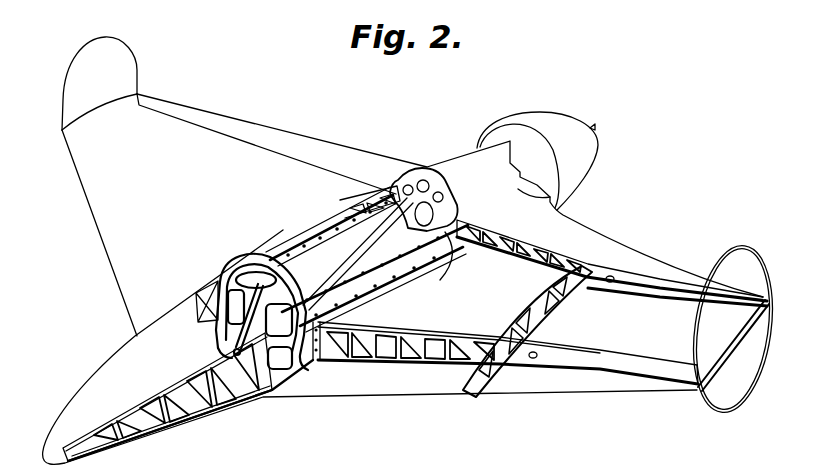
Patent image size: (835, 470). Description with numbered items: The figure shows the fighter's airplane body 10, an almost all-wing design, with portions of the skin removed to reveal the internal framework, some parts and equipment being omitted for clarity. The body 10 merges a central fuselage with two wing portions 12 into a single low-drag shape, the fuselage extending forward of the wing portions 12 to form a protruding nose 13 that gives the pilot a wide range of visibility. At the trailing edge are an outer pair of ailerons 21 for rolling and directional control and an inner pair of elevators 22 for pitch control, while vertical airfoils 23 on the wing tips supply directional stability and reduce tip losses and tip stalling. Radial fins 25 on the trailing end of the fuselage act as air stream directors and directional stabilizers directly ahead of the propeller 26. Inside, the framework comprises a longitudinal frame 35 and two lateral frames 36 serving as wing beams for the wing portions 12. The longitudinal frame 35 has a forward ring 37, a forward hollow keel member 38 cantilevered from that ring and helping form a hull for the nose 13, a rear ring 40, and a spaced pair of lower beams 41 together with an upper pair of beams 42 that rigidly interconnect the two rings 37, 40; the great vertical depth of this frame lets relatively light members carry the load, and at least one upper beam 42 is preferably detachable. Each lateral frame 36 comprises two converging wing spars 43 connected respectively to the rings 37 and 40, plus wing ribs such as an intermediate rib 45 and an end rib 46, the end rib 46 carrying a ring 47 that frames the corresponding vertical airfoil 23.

The airplane body 10 is at (97, 255).
The wing portions 12 is at (112, 186).
The nose 13 is at (118, 342).
The ailerons 21 is at (450, 184).
The elevators 22 is at (345, 152).
The vertical airfoils 23 is at (123, 63).
The radial fins 25 is at (553, 138).
The airplane propeller 26 is at (583, 106).
The longitudinal frame 35 is at (270, 393).
The lateral frames 36 is at (197, 310).
The forward ring 37 is at (250, 253).
The forward keel member 38 is at (117, 427).
The rear ring 40 is at (445, 185).
The lower beams 41 is at (335, 271).
The upper beams 42 is at (297, 247).
The wing spars 43 is at (202, 287).
The wing rib 45 is at (567, 303).
The end rib 46 is at (737, 353).
The ring 47 is at (771, 273).